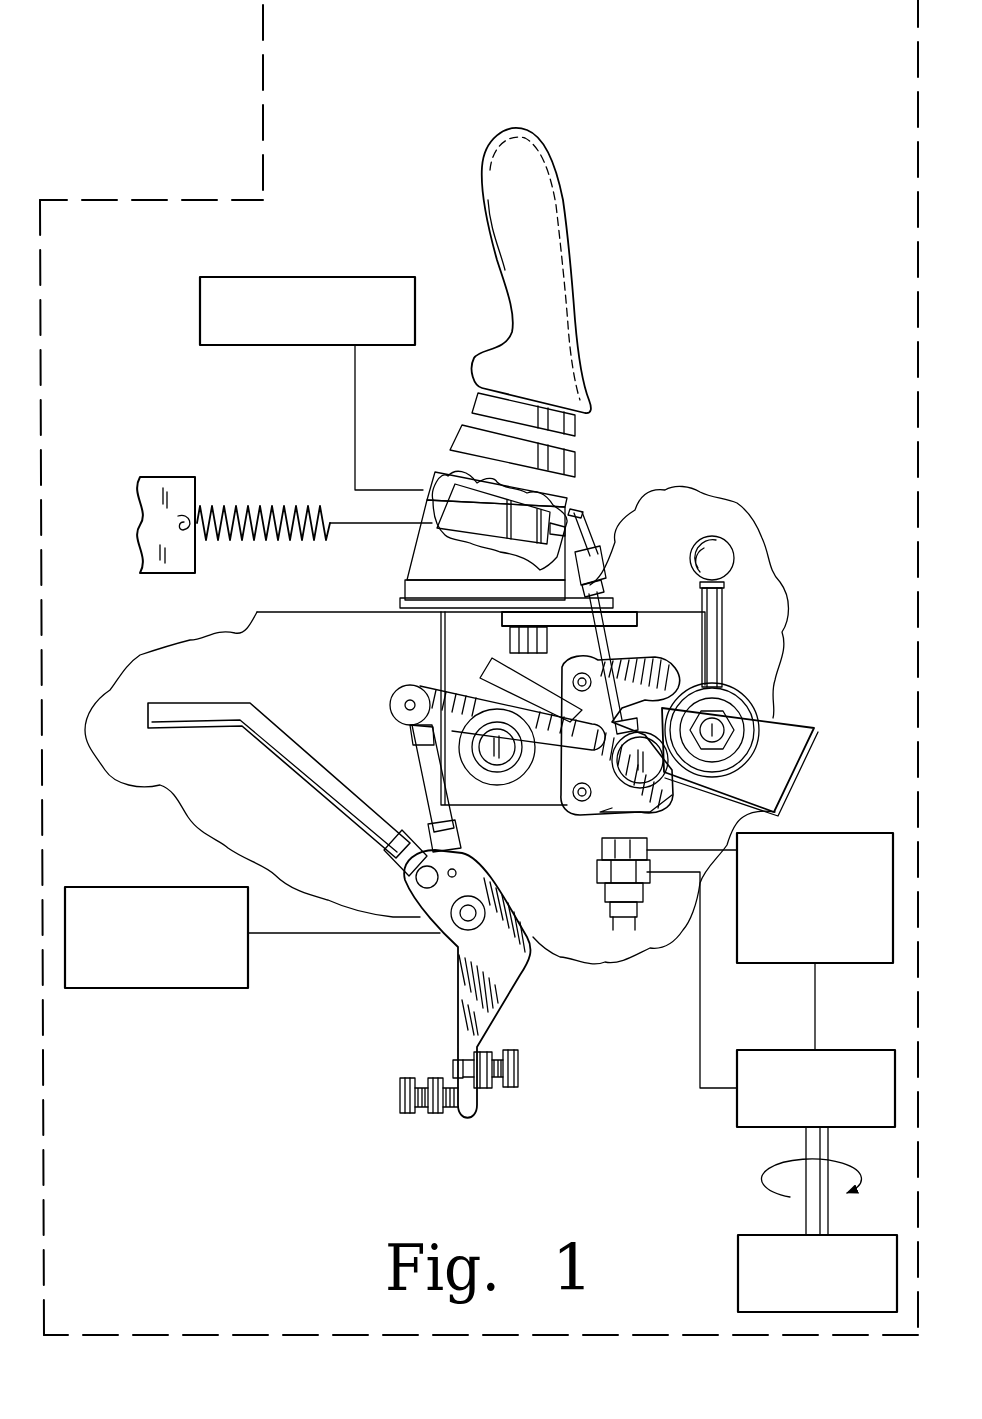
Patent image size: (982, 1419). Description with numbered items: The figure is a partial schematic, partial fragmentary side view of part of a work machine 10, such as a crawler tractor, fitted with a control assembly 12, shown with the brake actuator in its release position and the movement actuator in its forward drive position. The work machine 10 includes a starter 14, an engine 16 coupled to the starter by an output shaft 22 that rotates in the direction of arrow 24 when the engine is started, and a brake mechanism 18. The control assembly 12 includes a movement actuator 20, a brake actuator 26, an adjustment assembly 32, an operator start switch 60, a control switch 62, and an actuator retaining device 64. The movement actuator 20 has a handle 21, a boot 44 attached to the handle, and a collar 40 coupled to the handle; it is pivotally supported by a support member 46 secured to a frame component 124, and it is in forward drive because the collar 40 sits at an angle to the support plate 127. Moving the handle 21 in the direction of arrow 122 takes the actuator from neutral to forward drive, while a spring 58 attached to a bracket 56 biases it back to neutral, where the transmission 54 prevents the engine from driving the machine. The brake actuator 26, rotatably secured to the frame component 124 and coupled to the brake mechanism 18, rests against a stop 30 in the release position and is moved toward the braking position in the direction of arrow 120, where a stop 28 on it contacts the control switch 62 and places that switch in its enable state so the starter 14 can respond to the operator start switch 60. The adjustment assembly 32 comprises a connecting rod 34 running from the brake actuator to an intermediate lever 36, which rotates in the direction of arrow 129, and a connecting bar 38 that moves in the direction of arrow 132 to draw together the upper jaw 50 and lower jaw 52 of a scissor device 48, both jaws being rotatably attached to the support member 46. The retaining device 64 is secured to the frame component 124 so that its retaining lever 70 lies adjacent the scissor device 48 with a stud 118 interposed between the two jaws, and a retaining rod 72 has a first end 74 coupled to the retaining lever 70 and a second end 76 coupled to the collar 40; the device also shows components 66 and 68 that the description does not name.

The work machine 10 is at (148, 85).
The control assembly 12 is at (722, 358).
The starter 14 is at (868, 1053).
The engine 16 is at (742, 1260).
The brake mechanism 18 is at (100, 890).
The movement actuator 20 is at (526, 386).
The handle 21 is at (535, 163).
The output shaft 22 is at (824, 1213).
The arrow 24 is at (850, 1162).
The brake actuator 26 is at (280, 748).
The stop 28 is at (518, 1068).
The stop 30 is at (400, 1095).
The adjustment assembly 32 is at (449, 742).
The connecting rod 34 is at (428, 790).
The intermediate lever 36 is at (428, 690).
The connecting bar 38 is at (568, 752).
The collar 40 is at (499, 520).
The boot 44 is at (568, 430).
The support member 46 is at (442, 632).
The scissor device 48 is at (652, 636).
The upper jaw 50 is at (589, 728).
The lower jaw 52 is at (660, 803).
The transmission 54 is at (200, 280).
The bracket 56 is at (168, 483).
The spring 58 is at (262, 512).
The operator start switch 60 is at (862, 835).
The control switch 62 is at (597, 852).
The actuator retaining device 64 is at (705, 725).
The switch lever 66 is at (714, 648).
The switch 68 is at (785, 723).
The retaining lever 70 is at (640, 740).
The retaining rod 72 is at (603, 640).
The first end 74 is at (569, 678).
The second end 76 is at (587, 548).
The stud 118 is at (612, 808).
The arrow 120 is at (360, 960).
The arrow 122 is at (545, 75).
The frame component 124 is at (142, 660).
The support plate 127 is at (400, 602).
The arrow 129 is at (488, 777).
The arrow 132 is at (540, 690).